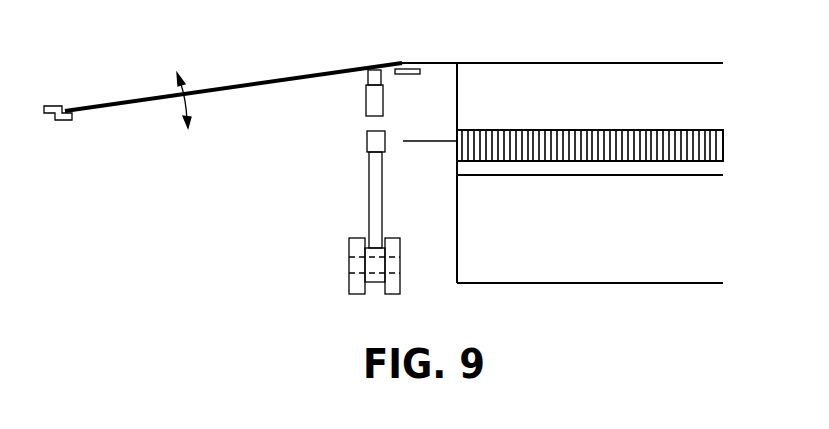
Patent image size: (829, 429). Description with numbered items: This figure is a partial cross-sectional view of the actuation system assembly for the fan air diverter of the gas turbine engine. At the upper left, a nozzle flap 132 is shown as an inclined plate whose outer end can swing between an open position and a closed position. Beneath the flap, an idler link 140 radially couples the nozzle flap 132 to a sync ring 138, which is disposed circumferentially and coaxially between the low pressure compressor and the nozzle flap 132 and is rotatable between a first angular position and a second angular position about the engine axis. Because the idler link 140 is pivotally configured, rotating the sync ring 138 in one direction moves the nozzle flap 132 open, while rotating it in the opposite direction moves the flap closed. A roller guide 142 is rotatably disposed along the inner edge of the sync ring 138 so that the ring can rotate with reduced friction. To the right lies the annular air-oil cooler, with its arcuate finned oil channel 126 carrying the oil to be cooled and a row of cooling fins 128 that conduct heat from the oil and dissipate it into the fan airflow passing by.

The nozzle flap 132 is at (337, 70).
The idler link 140 is at (366, 122).
The sync ring 138 is at (376, 194).
The roller guide 142 is at (362, 287).
The cooling fins 128 is at (693, 92).
The finned oil channel 126 is at (698, 218).